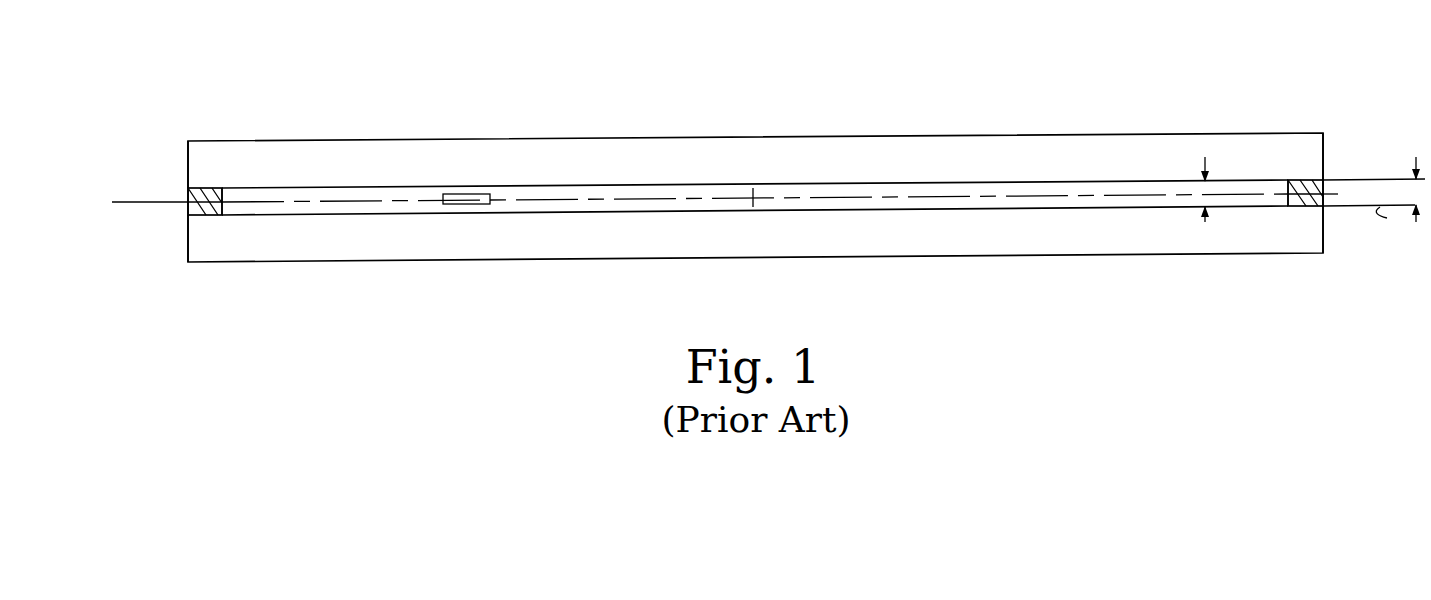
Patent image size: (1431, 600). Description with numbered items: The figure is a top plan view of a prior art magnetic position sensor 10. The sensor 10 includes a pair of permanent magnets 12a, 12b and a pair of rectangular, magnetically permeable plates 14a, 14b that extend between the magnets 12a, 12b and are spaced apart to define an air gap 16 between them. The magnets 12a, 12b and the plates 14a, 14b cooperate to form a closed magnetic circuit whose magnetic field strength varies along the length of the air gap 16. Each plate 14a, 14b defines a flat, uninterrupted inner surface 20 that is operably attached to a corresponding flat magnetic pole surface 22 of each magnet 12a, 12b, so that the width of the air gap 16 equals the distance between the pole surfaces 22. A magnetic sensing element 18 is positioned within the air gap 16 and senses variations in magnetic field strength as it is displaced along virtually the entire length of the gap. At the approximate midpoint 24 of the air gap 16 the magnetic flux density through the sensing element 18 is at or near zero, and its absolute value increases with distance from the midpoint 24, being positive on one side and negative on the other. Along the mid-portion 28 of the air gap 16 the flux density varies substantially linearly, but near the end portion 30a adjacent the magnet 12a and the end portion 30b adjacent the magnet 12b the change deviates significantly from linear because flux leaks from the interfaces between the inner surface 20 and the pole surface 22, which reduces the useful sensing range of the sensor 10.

The magnetic position sensor 10 is at (558, 97).
The permanent magnet 12a is at (178, 209).
The permanent magnet 12b is at (1326, 190).
The magnetically permeable plate 14a is at (968, 132).
The magnetically permeable plate 14b is at (867, 258).
The air gap 16 is at (1023, 205).
The magnetic sensing element 18 is at (462, 189).
The inner surface 20 is at (1072, 183).
The magnetic pole surface 22 is at (194, 188).
The midpoint 24 is at (756, 197).
The mid-portion 28 is at (874, 196).
The end portion 30a is at (280, 203).
The end portion 30b is at (1228, 196).